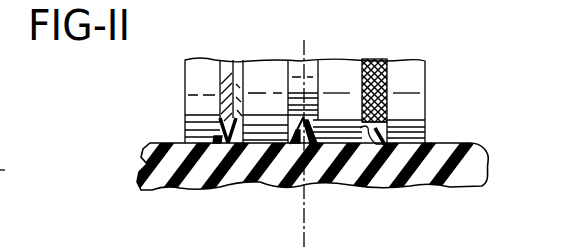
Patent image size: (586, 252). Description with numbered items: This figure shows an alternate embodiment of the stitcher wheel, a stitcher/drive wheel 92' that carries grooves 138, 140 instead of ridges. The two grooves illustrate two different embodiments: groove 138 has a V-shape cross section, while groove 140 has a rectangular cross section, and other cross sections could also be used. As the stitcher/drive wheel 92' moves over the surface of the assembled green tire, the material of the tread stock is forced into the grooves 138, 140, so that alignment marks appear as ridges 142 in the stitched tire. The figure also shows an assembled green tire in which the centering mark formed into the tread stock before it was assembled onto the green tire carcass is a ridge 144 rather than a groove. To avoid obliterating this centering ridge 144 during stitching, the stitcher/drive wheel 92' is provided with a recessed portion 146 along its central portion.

The stitcher/drive wheel 92' is at (268, 100).
The groove 138 is at (228, 74).
The groove 140 is at (378, 61).
The ridges 142 is at (226, 134).
The ridge 144 is at (271, 140).
The recessed portion 146 is at (324, 124).